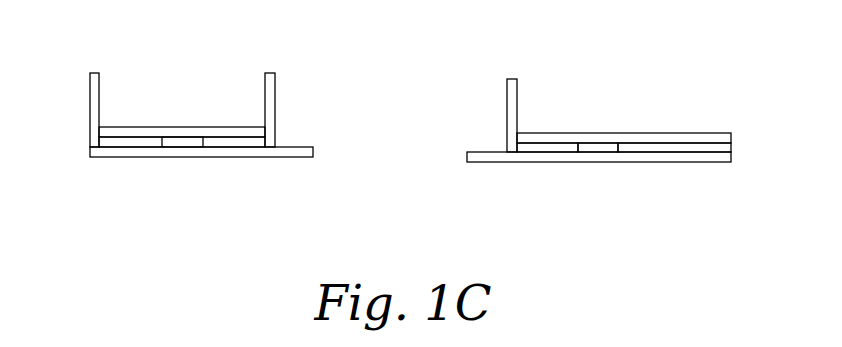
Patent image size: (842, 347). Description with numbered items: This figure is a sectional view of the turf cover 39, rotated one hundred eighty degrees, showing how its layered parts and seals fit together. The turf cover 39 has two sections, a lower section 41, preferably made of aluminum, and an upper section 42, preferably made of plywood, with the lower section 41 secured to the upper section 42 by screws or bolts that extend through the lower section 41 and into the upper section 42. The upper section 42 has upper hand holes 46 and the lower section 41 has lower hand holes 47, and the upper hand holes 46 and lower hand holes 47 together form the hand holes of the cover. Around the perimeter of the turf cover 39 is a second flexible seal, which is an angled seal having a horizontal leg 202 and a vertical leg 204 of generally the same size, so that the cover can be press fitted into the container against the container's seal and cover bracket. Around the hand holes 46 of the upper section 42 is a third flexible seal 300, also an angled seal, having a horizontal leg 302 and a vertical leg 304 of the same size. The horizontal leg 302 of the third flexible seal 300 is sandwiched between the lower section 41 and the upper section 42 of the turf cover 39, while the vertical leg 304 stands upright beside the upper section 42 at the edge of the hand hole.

The vertical leg 204 is at (90, 103).
The horizontal leg 202 is at (128, 142).
The upper section 42 is at (179, 130).
The horizontal leg 302 is at (226, 142).
The third flexible seal 300 is at (288, 79).
The vertical leg 304 is at (276, 104).
The lower section 41 is at (193, 158).
The lower hand holes 47 is at (334, 162).
The upper hand holes 46 is at (401, 120).
The turf cover 39 is at (562, 191).